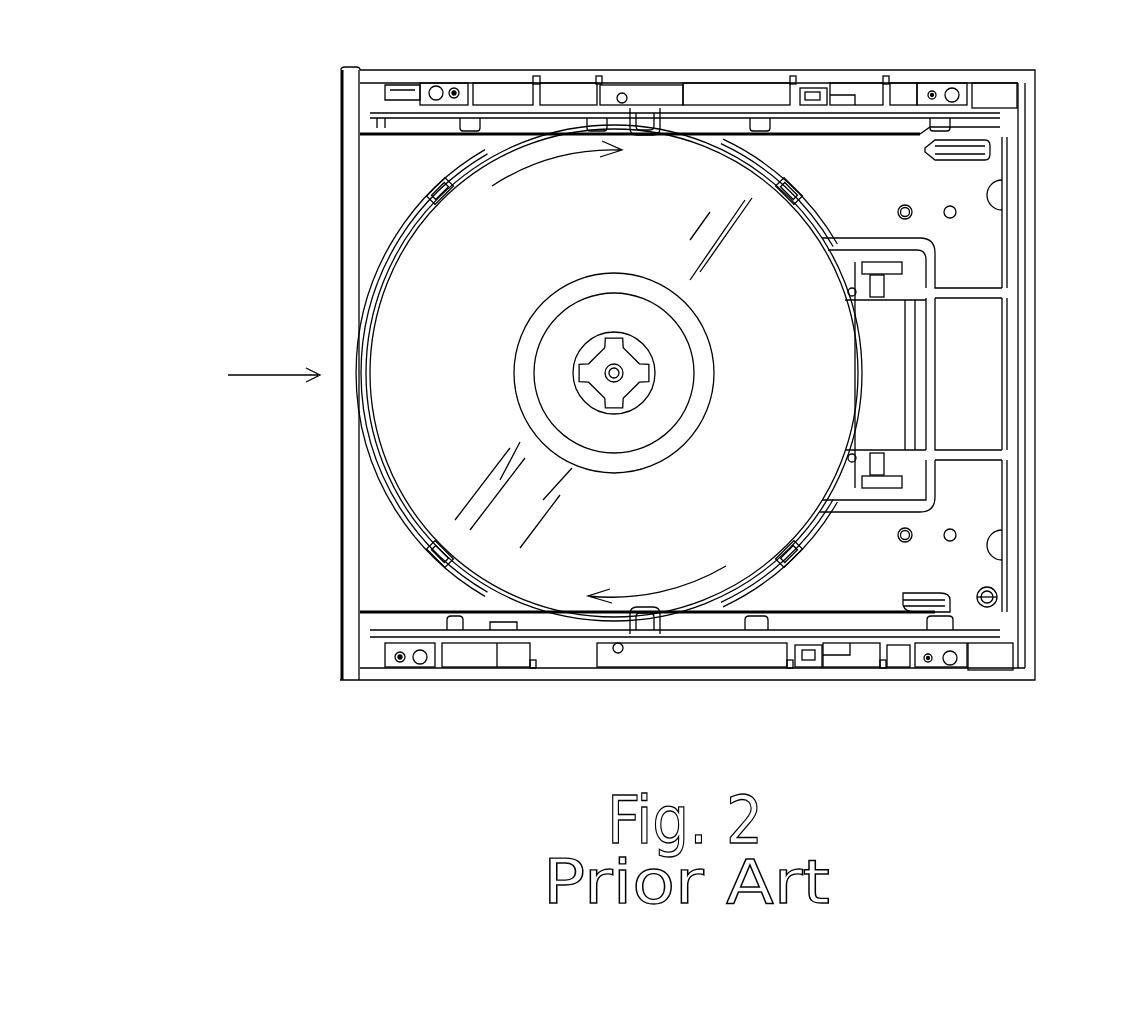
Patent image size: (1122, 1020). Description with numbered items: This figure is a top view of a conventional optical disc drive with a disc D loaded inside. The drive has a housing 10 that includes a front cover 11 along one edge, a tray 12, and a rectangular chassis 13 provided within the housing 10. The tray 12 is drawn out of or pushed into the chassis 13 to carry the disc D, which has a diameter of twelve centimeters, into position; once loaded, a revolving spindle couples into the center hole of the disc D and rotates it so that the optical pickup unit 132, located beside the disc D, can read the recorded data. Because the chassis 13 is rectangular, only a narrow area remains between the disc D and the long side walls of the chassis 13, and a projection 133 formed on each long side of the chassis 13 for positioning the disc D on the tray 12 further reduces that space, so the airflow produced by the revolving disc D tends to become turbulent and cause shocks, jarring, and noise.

The housing 10 is at (915, 680).
The front cover 11 is at (352, 88).
The tray 12 is at (395, 210).
The chassis 13 is at (990, 106).
The optical pickup unit 132 is at (870, 372).
The projection 133 is at (645, 130).
The disc D is at (507, 573).